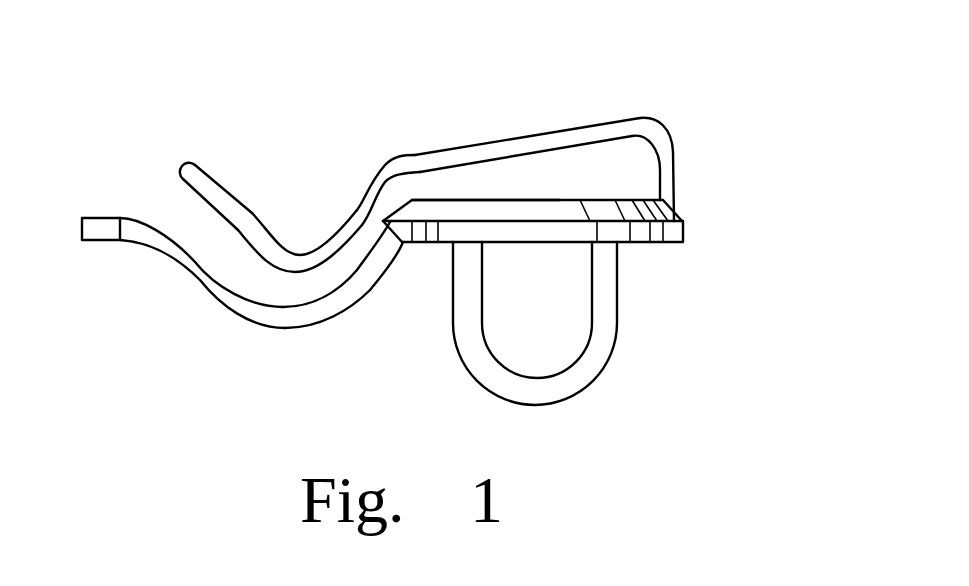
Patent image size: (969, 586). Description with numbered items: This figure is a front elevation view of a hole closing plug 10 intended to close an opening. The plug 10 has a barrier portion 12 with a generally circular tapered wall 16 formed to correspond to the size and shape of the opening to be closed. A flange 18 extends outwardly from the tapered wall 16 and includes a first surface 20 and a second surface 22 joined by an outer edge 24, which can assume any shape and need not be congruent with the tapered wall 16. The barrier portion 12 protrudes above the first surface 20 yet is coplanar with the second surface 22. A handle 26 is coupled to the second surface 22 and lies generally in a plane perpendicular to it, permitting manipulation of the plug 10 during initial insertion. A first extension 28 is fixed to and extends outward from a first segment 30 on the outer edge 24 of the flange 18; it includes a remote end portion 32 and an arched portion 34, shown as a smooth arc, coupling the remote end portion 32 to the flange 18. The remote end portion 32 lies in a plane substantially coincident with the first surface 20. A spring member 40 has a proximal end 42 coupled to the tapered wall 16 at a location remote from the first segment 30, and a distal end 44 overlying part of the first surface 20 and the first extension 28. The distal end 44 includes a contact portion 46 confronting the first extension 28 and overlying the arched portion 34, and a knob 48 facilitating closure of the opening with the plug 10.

The hole closing plug 10 is at (728, 83).
The barrier portion 12 is at (537, 194).
The tapered wall 16 is at (632, 208).
The flange 18 is at (683, 232).
The first surface 20 is at (450, 195).
The second surface 22 is at (427, 248).
The outer edge 24 is at (537, 243).
The handle 26 is at (595, 379).
The first extension 28 is at (200, 282).
The first segment 30 is at (393, 233).
The remote end portion 32 is at (82, 228).
The arched portion 34 is at (285, 327).
The spring member 40 is at (507, 140).
The proximal end 42 is at (666, 198).
The distal end 44 is at (214, 190).
The contact portion 46 is at (294, 256).
The knob 48 is at (182, 163).